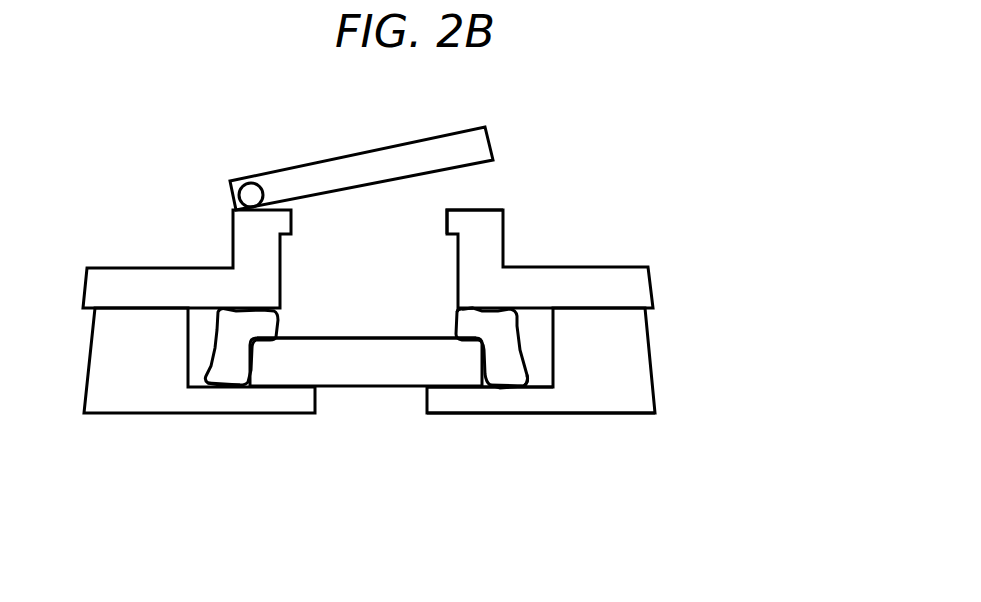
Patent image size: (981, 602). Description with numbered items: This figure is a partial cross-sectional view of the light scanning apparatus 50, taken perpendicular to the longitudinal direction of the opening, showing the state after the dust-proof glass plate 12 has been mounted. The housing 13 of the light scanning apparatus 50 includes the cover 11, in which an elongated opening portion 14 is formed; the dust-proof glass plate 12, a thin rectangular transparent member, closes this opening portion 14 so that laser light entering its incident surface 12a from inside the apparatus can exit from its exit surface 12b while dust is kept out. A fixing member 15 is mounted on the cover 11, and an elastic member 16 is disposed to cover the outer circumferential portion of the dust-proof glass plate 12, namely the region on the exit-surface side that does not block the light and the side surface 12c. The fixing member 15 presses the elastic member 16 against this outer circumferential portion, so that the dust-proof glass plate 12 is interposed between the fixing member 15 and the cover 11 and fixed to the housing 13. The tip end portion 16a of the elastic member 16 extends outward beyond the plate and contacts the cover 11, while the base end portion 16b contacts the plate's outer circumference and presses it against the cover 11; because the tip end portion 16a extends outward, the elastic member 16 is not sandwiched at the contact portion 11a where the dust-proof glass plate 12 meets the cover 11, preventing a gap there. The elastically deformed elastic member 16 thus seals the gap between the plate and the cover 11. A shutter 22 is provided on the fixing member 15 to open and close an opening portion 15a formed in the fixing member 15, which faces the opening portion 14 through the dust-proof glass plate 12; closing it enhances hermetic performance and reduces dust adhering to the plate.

The cover 11 is at (600, 375).
The contact portion 11a is at (463, 390).
The dust-proof glass plate 12 is at (350, 377).
The incident surface 12a is at (388, 390).
The exit surface 12b is at (362, 338).
The side surface 12c is at (250, 362).
The housing 13 is at (533, 402).
The opening portion 14 is at (368, 400).
The fixing member 15 is at (248, 233).
The opening portion 15a is at (447, 218).
The elastic member 16 is at (498, 340).
The tip end portion 16a is at (520, 380).
The base end portion 16b is at (468, 323).
The shutter 22 is at (378, 163).
The light scanning apparatus 50 is at (643, 170).